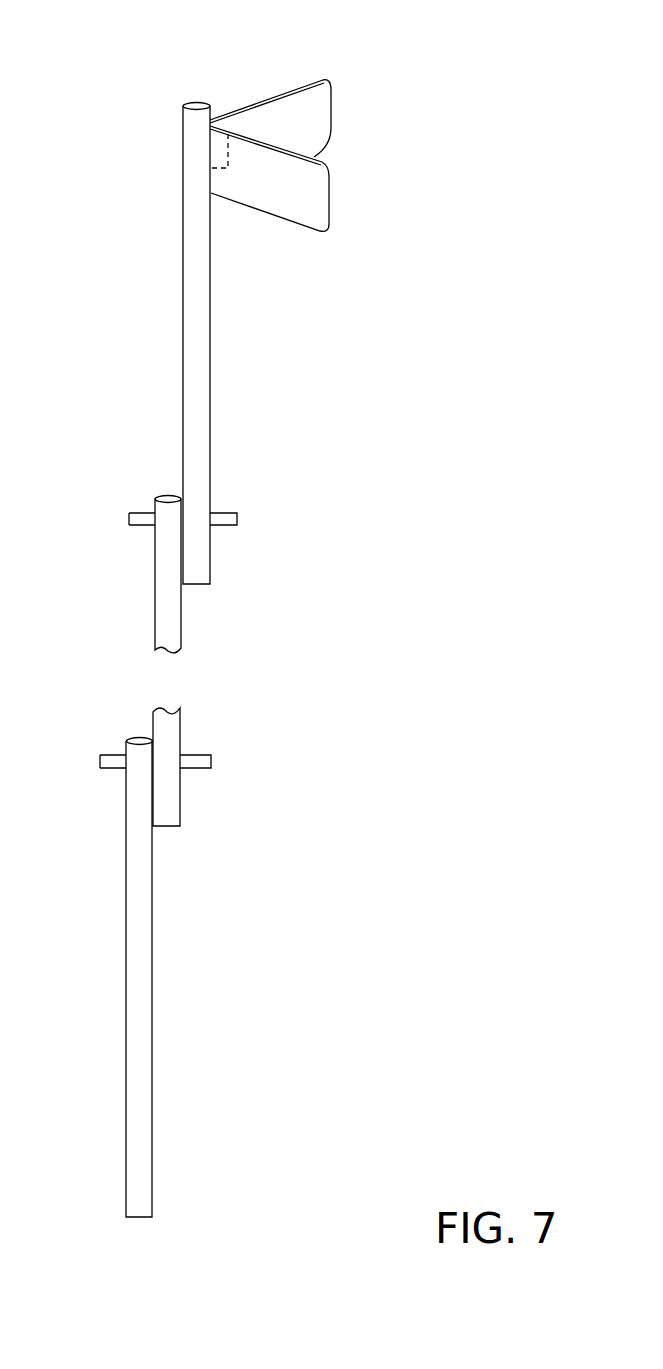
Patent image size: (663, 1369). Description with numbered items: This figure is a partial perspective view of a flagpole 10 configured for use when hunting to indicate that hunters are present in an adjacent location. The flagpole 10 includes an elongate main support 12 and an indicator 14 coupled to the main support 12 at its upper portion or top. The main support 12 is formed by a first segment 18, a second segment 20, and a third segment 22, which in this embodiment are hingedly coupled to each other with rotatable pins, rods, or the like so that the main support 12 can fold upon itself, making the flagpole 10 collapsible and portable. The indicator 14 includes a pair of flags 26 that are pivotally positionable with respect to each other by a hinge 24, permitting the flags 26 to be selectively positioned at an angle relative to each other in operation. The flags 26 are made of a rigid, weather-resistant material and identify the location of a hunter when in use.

The flagpole 10 is at (458, 36).
The main support 12 is at (180, 268).
The indicator 14 is at (332, 76).
The first segment 18 is at (137, 942).
The second segment 20 is at (155, 575).
The third segment 22 is at (184, 103).
The hinge 24 is at (229, 141).
The flags 26 is at (298, 131).